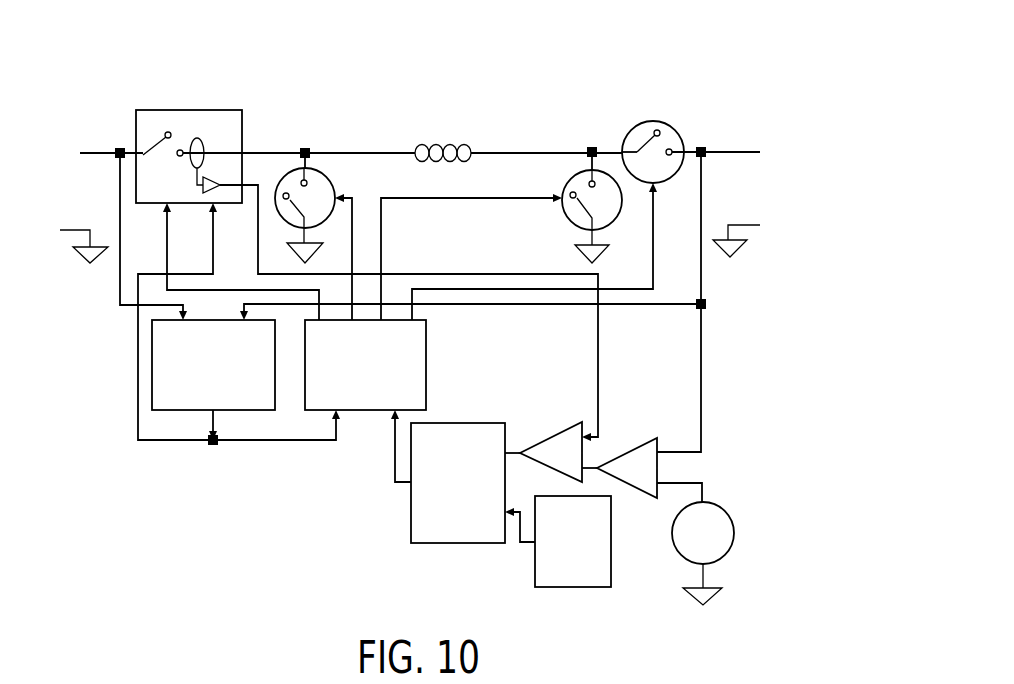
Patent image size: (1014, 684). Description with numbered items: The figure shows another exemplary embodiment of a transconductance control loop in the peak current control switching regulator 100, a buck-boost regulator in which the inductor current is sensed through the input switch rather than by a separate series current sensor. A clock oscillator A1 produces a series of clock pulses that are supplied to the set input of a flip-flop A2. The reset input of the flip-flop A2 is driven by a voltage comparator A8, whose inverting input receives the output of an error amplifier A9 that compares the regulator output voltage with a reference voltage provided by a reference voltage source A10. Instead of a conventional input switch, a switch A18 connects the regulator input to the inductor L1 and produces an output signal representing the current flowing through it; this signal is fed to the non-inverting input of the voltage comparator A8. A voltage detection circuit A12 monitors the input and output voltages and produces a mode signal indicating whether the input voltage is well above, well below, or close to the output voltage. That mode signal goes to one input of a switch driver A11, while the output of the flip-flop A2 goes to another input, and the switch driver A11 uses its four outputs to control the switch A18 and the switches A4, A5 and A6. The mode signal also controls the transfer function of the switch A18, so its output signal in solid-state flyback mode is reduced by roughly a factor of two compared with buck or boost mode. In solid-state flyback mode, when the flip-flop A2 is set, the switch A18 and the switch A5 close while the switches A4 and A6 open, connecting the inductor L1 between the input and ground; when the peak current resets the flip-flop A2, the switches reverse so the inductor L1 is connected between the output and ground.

The peak current control switching regulator 100 is at (431, 310).
The switch A18 is at (189, 156).
The inductor L1 is at (443, 141).
The switch A4 is at (305, 210).
The switch A5 is at (592, 210).
The switch A6 is at (653, 152).
The voltage detection circuit A12 is at (213, 365).
The switch driver A11 is at (365, 365).
The flip-flop A2 is at (458, 483).
The clock oscillator A1 is at (573, 541).
The voltage comparator A8 is at (552, 452).
The error amplifier A9 is at (627, 468).
The reference voltage source A10 is at (703, 553).